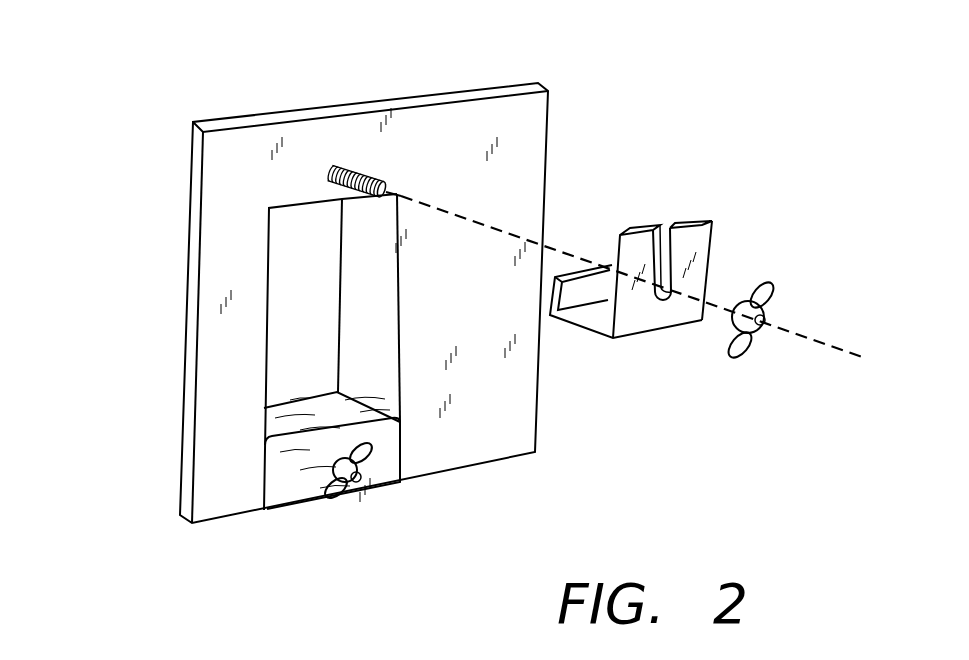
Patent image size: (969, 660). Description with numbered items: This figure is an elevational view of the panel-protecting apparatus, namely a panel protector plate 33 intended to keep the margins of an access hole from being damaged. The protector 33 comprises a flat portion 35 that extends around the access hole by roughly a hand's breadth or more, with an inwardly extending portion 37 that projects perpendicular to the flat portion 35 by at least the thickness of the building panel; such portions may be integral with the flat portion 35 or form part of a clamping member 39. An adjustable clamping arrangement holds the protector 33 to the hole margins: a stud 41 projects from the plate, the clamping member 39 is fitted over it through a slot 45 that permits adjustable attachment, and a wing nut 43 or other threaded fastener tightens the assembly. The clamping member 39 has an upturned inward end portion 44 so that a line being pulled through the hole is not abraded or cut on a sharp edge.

The panel protector plate 33 is at (100, 293).
The flat portion 35 is at (267, 147).
The inwardly extending portions 37 is at (363, 320).
The clamping member 39 is at (710, 253).
The stud 41 is at (352, 167).
The wing nut 43 is at (766, 285).
The upturned inward end portion 44 is at (585, 297).
The U-shaped slot 45 is at (661, 222).